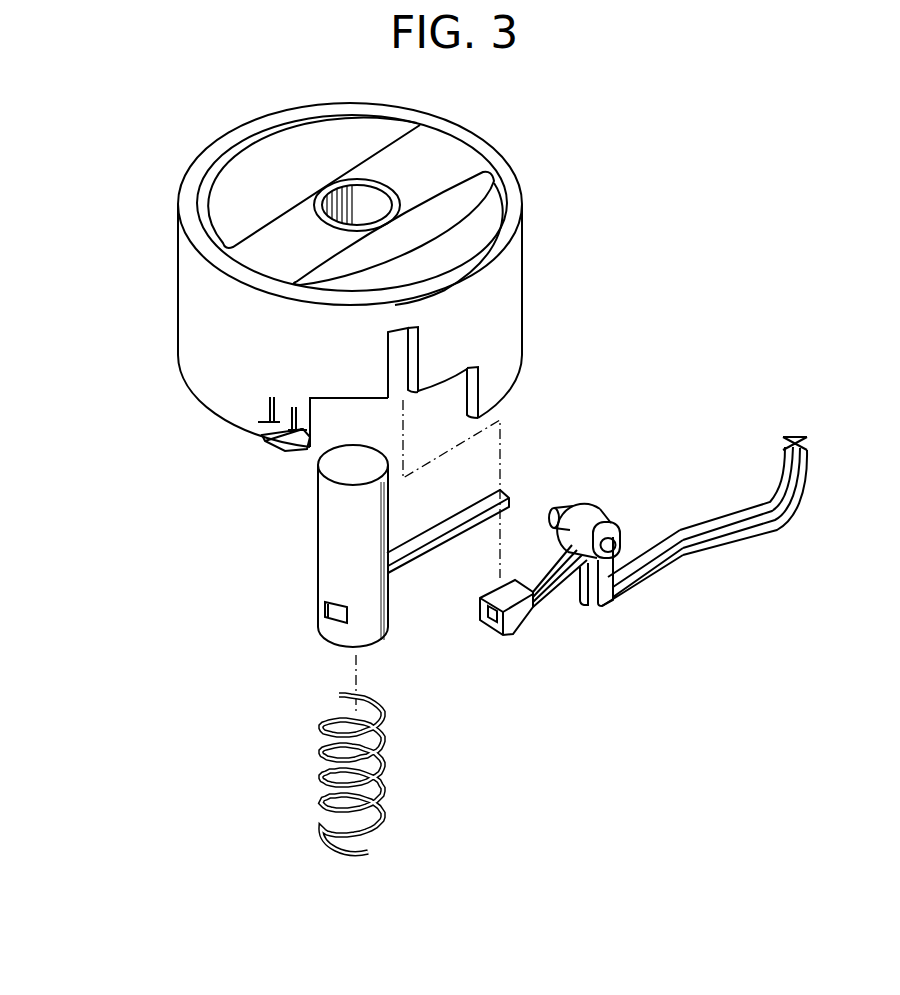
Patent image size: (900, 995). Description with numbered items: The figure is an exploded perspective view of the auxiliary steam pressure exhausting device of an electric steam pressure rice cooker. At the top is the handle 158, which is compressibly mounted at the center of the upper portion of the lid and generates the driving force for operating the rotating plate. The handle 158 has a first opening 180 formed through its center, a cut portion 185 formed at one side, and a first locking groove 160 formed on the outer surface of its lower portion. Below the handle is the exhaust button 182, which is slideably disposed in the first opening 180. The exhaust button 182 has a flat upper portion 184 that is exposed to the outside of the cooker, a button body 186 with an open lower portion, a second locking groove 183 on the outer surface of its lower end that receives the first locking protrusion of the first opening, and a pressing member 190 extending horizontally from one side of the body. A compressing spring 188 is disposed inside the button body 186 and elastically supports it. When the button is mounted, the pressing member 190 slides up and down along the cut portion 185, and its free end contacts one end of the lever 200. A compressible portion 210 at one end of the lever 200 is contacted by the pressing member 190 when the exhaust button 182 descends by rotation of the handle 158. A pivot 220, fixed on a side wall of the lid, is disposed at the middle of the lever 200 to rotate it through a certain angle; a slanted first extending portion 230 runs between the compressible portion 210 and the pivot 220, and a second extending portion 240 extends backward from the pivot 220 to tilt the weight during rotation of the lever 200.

The handle 158 is at (366, 258).
The first opening 180 is at (360, 200).
The cut portion 185 is at (400, 348).
The first locking groove 160 is at (255, 433).
The exhaust button 182 is at (330, 556).
The flat upper portion 184 is at (343, 465).
The button body 186 is at (345, 525).
The second locking groove 183 is at (323, 610).
The pressing member 190 is at (440, 540).
The compressing spring 188 is at (383, 788).
The lever 200 is at (676, 580).
The compressible portion 210 is at (503, 603).
The pivot 220 is at (617, 528).
The first extending portion 230 is at (553, 588).
The second extending portion 240 is at (777, 521).